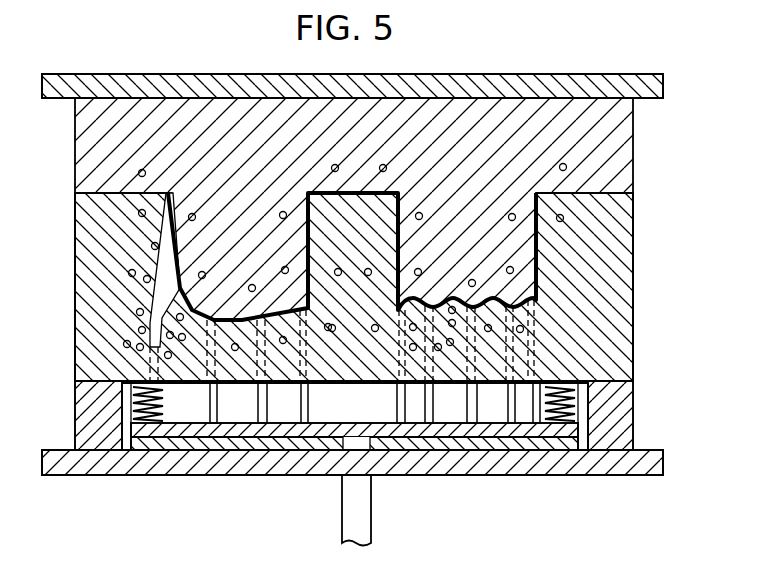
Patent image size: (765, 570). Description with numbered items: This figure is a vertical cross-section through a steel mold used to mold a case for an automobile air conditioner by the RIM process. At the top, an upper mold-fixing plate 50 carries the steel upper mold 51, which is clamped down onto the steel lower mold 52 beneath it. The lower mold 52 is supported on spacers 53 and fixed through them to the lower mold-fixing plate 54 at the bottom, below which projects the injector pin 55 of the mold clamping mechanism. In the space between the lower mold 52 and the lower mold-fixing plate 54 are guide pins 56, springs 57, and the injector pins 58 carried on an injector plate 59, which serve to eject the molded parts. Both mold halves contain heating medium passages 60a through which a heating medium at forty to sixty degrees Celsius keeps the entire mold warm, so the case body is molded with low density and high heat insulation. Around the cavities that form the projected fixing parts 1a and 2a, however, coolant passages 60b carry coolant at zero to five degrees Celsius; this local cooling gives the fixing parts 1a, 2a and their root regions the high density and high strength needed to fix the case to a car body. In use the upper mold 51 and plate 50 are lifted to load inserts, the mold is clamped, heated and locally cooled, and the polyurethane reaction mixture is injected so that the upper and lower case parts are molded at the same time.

The upper mold-fixing plate 50 is at (549, 74).
The steel upper mold 51 is at (633, 126).
The steel lower mold 52 is at (633, 275).
The spacers 53 is at (78, 430).
The lower mold-fixing plate 54 is at (663, 462).
The injector pin of a mold clamping mechanism 55 is at (372, 521).
The guide pins 56 is at (130, 375).
The springs 57 is at (140, 402).
The injector pins 58 is at (205, 400).
The injector plate 59 is at (515, 440).
The heating medium passages 60a is at (567, 168).
The coolant passages 60b is at (136, 311).
The projected fixing part 2a is at (150, 303).
The projected fixing part 1a is at (432, 312).